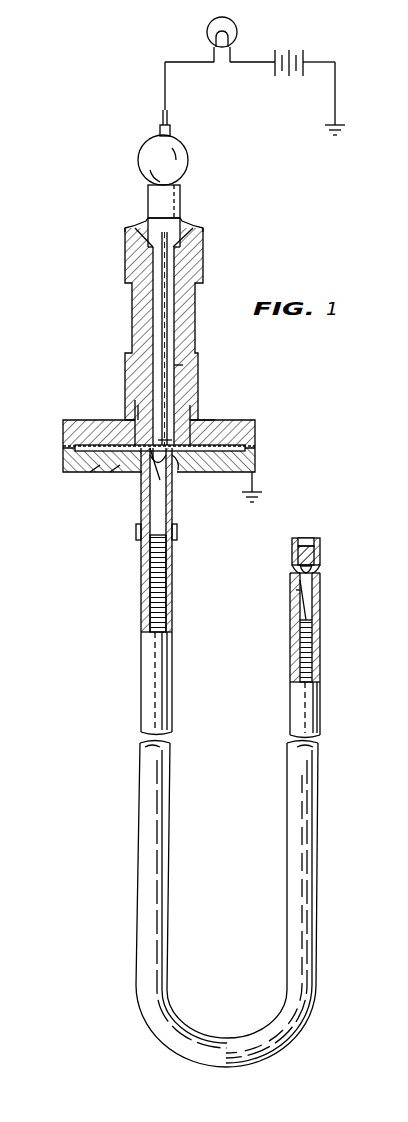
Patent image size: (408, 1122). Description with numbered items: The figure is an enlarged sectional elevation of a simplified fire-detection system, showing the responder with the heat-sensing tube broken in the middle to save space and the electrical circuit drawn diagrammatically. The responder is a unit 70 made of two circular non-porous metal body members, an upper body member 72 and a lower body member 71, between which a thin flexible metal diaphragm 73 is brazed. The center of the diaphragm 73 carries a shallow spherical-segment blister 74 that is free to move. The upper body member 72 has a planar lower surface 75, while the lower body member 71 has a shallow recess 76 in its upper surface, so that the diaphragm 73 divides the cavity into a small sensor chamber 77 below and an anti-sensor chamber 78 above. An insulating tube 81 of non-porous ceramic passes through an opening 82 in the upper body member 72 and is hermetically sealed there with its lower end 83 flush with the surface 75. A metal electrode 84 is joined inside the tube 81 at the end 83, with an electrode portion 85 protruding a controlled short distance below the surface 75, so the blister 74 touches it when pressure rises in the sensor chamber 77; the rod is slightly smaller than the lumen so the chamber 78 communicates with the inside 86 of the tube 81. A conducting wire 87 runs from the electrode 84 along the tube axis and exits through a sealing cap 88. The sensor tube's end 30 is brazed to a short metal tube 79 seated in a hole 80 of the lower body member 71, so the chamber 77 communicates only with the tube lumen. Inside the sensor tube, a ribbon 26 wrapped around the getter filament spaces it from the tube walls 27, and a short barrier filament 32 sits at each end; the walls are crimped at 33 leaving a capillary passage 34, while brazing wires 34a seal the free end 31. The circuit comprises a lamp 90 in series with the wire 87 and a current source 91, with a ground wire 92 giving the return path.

The lamp 90 is at (240, 28).
The source of electrical current 91 is at (296, 80).
The conducting wire 87 is at (170, 133).
The sealing cap 88 is at (146, 220).
The tube 81 is at (194, 320).
The metal electrode 84 is at (161, 335).
The inside of the tube 86 is at (168, 362).
The lower end of the tube 83 is at (132, 410).
The opening 82 is at (134, 428).
The electrode portion 85 is at (161, 430).
The anti-sensor chamber 78 is at (193, 418).
The planar lower surface 75 is at (205, 430).
The unit 70 is at (165, 450).
The upper body member 72 is at (62, 434).
The lower body member 71 is at (62, 466).
The diaphragm 73 is at (73, 447).
The sensor chamber 77 is at (95, 468).
The blister 74 is at (118, 470).
The recess 76 is at (250, 492).
The ground wire 92 is at (262, 503).
The short length of filament 32 is at (173, 512).
The crimp 33 is at (150, 480).
The end of the tube 30 is at (150, 462).
The capillary passage 34 is at (170, 490).
The brazing wires 34a is at (315, 552).
The hole 80 is at (178, 478).
The short metal tube 79 is at (136, 529).
The free end of the tube 31 is at (318, 540).
The ribbon 26 is at (306, 660).
The tube walls 27 is at (318, 679).